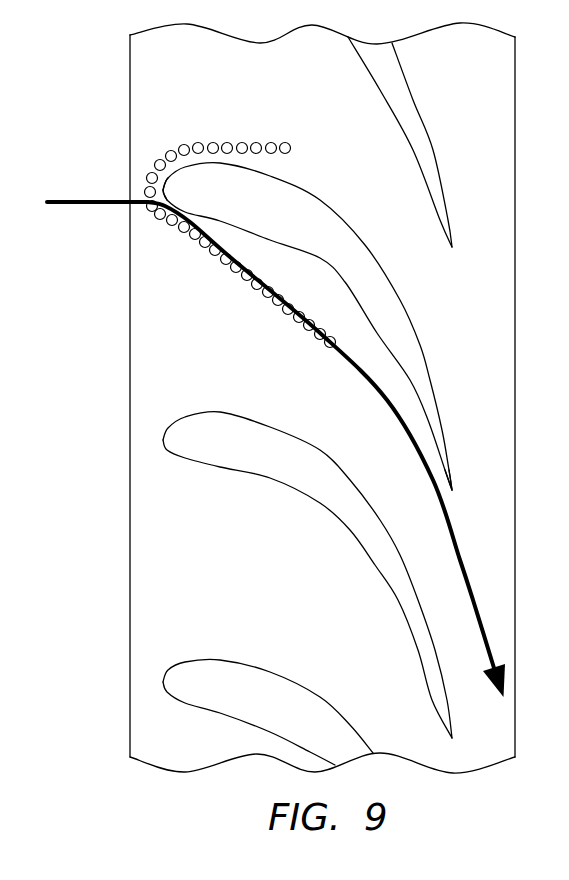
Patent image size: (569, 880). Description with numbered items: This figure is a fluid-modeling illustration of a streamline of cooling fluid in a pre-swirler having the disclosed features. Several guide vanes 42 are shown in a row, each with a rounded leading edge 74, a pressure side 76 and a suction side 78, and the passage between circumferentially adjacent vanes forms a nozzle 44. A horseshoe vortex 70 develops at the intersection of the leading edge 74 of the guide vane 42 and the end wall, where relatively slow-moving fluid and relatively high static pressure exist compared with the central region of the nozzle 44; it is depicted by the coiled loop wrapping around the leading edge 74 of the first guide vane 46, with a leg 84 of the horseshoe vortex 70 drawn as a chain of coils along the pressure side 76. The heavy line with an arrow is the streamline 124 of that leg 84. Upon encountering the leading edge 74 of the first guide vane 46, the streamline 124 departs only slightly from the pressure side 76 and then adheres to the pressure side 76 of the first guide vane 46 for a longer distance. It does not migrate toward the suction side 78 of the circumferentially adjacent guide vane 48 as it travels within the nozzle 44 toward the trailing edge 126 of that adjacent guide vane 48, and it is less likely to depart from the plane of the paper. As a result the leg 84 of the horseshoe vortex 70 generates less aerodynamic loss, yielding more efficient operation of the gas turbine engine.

The guide vane 42 is at (307, 401).
The nozzle 44 is at (275, 352).
The first guide vane 46 is at (307, 326).
The circumferentially adjacent guide vane 48 is at (307, 589).
The horseshoe vortex 70 is at (218, 155).
The leading edge 74 is at (194, 189).
The pressure side 76 is at (307, 340).
The suction side 78 is at (307, 569).
The leg 84 is at (245, 278).
The streamline 124 is at (270, 429).
The trailing edge 126 is at (474, 503).